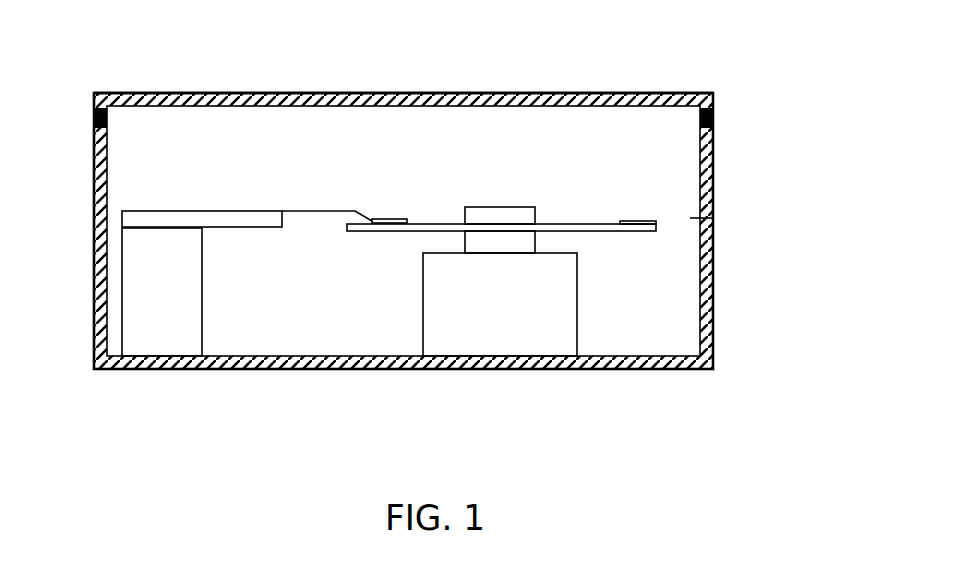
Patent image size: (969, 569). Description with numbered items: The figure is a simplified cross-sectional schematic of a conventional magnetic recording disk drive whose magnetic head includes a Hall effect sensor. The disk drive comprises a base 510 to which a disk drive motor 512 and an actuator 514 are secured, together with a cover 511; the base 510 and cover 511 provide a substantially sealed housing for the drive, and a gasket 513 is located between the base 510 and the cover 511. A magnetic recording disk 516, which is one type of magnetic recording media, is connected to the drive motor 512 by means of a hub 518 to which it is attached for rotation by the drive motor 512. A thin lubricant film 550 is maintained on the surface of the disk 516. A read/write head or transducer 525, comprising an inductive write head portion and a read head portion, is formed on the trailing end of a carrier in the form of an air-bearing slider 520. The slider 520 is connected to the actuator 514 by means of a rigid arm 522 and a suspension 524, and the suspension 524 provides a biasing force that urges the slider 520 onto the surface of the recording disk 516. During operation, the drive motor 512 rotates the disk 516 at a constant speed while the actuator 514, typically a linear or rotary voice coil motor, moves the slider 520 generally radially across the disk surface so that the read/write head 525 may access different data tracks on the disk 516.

The base 510 is at (706, 320).
The cover 511 is at (100, 93).
The disk drive motor 512 is at (495, 328).
The gasket 513 is at (713, 118).
The actuator 514 is at (143, 335).
The magnetic recording disk 516 is at (713, 218).
The hub 518 is at (488, 207).
The air-bearing slider 520 is at (398, 223).
The rigid arm 522 is at (223, 211).
The suspension 524 is at (315, 211).
The read/write head 525 is at (363, 219).
The thin lubricant film 550 is at (630, 221).